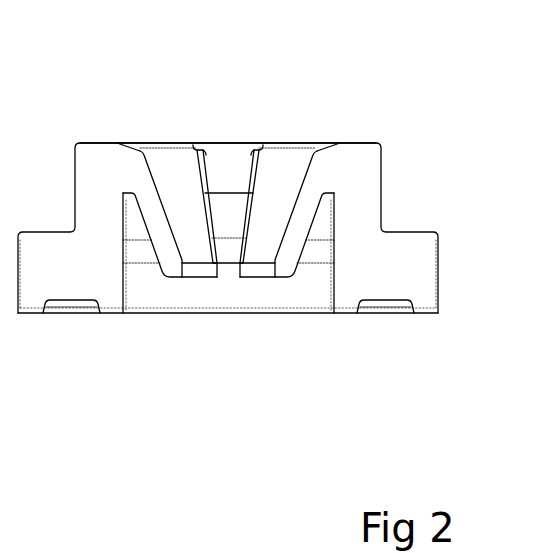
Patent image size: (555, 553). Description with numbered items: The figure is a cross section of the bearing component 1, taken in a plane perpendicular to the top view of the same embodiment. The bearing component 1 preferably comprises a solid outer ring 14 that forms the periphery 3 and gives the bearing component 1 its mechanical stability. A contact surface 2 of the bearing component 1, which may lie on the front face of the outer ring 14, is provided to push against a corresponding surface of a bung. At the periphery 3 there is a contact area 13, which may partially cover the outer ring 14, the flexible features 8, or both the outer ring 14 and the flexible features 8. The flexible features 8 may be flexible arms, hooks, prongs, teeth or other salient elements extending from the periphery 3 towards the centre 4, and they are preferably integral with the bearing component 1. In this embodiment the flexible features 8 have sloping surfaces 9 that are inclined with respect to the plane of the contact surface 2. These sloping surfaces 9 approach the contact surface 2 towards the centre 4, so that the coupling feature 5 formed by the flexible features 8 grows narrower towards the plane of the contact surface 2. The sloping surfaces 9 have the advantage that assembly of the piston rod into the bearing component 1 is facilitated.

The bearing component 1 is at (388, 165).
The contact surface 2 is at (348, 316).
The periphery 3 is at (355, 143).
The centre 4 is at (232, 147).
The coupling feature 5 is at (353, 450).
The flexible features 8 is at (172, 273).
The sloping surfaces 9 is at (268, 220).
The contact area 13 is at (172, 147).
The outer ring 14 is at (68, 273).